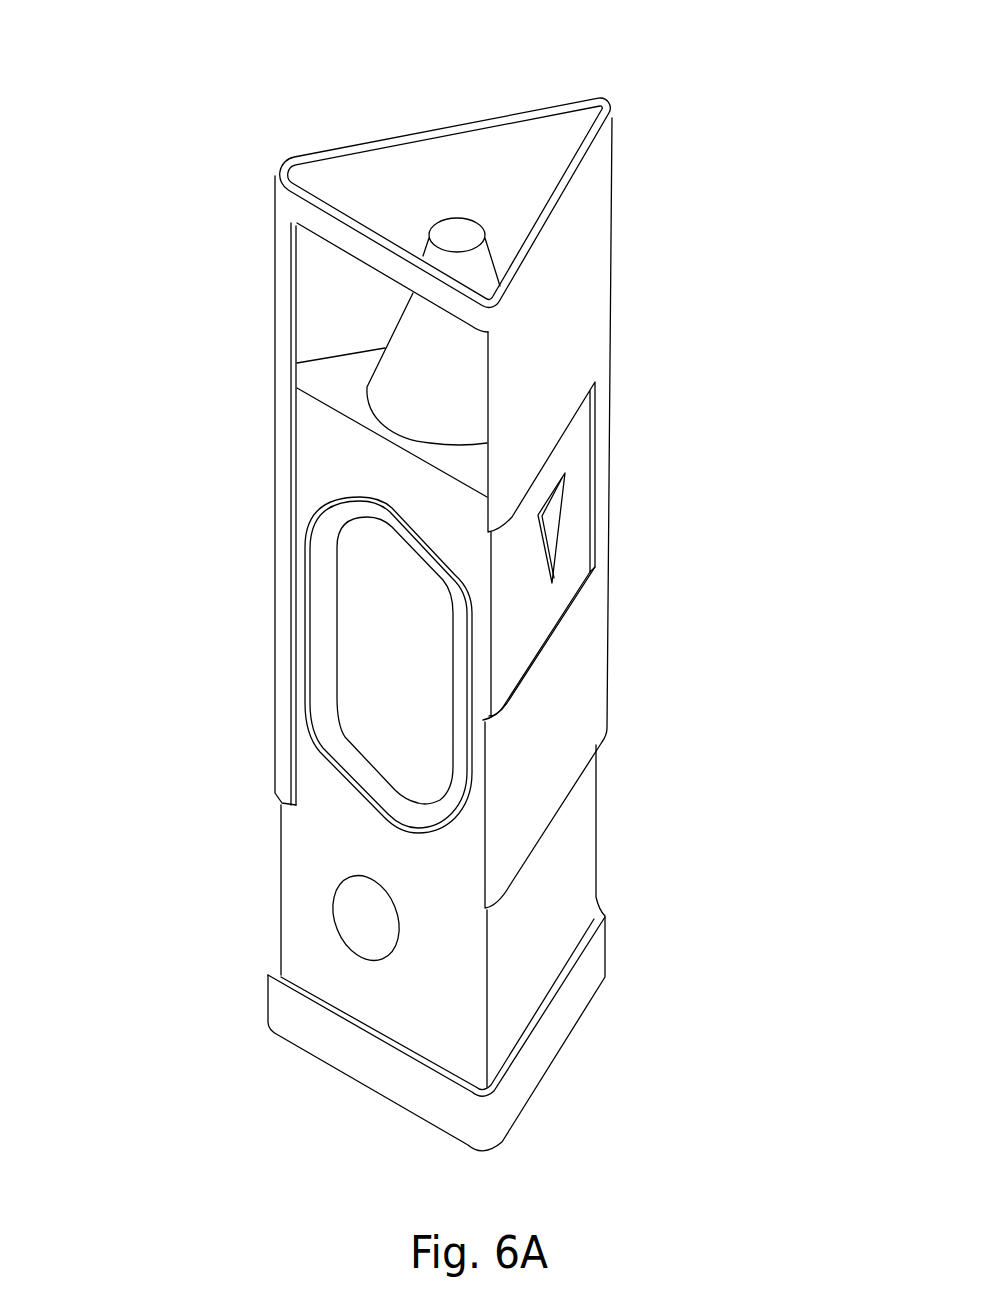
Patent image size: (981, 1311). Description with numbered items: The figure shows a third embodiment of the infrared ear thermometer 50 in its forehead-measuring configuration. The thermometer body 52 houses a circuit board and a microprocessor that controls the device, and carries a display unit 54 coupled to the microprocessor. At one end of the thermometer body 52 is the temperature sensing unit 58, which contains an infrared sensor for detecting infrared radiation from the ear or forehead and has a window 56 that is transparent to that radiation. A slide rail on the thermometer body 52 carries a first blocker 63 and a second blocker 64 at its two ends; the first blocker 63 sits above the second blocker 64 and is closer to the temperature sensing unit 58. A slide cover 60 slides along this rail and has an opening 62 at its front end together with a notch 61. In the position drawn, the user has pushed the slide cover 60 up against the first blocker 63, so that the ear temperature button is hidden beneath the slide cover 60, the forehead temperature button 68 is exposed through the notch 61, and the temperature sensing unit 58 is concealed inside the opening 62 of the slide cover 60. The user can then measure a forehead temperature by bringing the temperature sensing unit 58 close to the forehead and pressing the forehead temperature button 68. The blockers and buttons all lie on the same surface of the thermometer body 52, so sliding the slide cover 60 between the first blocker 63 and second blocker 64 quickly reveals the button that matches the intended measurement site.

The infrared ear thermometer 50 is at (203, 153).
The thermometer body 52 is at (320, 482).
The display unit 54 is at (350, 657).
The window 56 is at (457, 235).
The temperature sensing unit 58 is at (400, 340).
The slide cover 60 is at (567, 343).
The notch 61 is at (523, 618).
The opening 62 is at (540, 147).
The first blocker 63 is at (567, 798).
The second blocker 64 is at (570, 987).
The forehead temperature button 68 is at (548, 527).